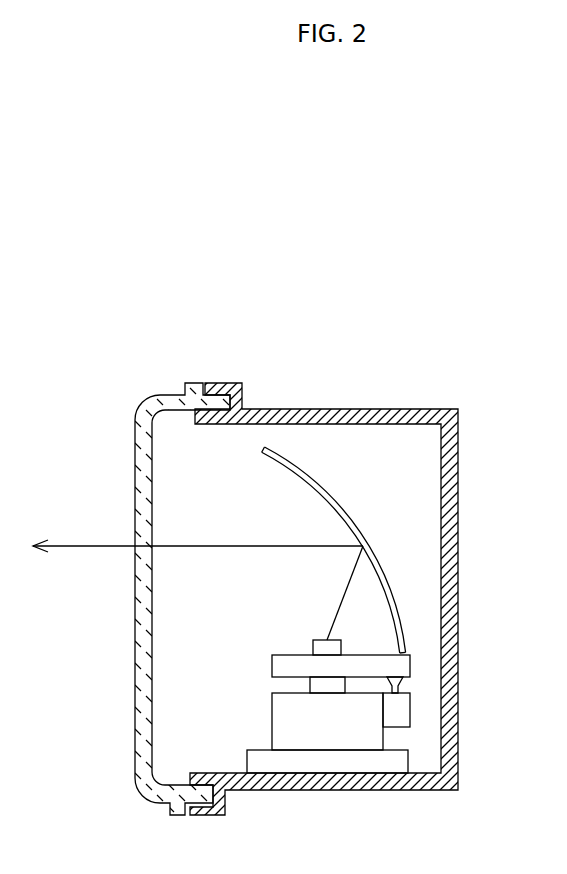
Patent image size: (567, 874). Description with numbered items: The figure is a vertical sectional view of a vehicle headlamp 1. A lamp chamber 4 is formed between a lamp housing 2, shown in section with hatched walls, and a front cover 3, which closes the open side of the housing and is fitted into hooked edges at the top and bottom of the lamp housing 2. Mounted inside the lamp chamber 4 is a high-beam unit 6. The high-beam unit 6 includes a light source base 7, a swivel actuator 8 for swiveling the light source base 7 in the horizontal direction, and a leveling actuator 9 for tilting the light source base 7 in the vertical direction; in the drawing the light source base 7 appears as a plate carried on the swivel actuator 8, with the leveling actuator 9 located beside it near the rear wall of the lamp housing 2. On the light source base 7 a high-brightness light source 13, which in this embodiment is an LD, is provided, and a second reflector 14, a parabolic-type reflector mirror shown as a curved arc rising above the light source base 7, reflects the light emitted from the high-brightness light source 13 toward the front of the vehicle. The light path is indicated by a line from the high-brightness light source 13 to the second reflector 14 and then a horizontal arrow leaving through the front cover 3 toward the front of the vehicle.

The vehicle headlamp 1 is at (133, 358).
The lamp housing 2 is at (325, 417).
The front cover 3 is at (135, 490).
The lamp chamber 4 is at (160, 648).
The high-beam unit 6 is at (358, 500).
The light source base 7 is at (283, 662).
The swivel actuator 8 is at (288, 717).
The leveling actuator 9 is at (405, 707).
The high-brightness light source 13 is at (318, 640).
The second reflector 14 is at (313, 493).